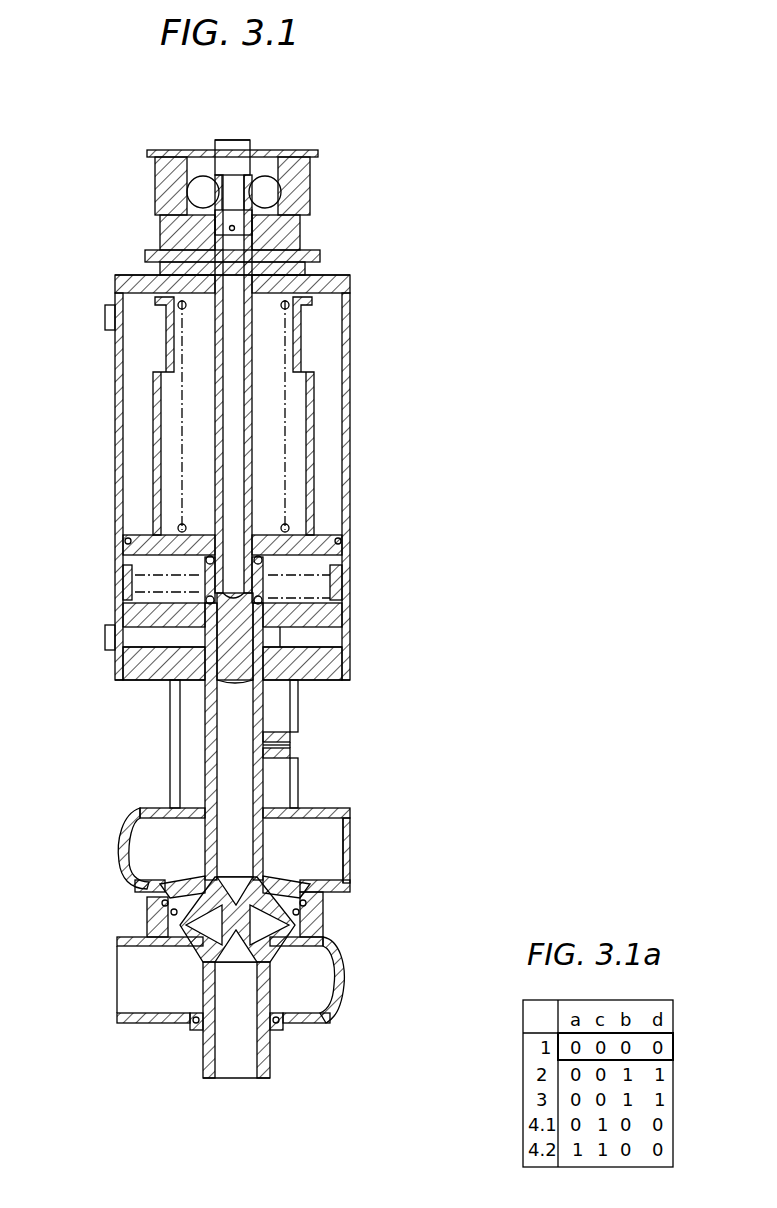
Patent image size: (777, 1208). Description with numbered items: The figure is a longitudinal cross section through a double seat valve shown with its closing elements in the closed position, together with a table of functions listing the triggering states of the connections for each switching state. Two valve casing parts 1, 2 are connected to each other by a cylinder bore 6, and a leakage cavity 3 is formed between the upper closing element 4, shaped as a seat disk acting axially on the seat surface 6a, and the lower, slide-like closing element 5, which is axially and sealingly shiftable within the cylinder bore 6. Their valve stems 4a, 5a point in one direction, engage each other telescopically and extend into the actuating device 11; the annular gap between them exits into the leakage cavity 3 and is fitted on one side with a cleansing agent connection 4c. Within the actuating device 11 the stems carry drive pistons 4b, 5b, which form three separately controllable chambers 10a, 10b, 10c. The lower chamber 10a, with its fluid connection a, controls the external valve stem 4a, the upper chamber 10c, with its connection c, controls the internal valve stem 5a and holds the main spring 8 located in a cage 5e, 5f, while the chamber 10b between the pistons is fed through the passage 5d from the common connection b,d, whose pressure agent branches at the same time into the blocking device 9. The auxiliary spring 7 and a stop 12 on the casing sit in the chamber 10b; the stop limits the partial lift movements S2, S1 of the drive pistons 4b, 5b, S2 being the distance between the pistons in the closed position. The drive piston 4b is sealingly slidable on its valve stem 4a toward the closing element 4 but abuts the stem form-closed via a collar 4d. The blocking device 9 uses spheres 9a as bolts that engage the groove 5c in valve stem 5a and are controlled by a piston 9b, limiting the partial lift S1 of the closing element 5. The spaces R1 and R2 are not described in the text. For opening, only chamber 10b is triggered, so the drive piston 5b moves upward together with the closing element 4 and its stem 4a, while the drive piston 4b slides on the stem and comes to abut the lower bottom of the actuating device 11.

The valve casing part 1 is at (302, 844).
The valve casing part 2 is at (150, 981).
The leakage cavity 3 is at (302, 912).
The closing element 4 is at (178, 884).
The valve stem 4a is at (212, 856).
The drive piston 4b is at (320, 625).
The cleansing agent connection 4c is at (292, 736).
The collar 4d is at (172, 678).
The closing element 5 is at (202, 947).
The valve stem 5a is at (232, 828).
The drive piston 5b is at (326, 535).
The groove 5c is at (236, 175).
The passage 5d is at (254, 578).
The cage 5e is at (312, 490).
The cage 5f is at (300, 320).
The cylinder bore 6 is at (150, 920).
The seat surface 6a is at (162, 898).
The auxiliary spring 7 is at (272, 598).
The main spring 8 is at (322, 422).
The blocking device 9 is at (327, 176).
The spheres 9a is at (265, 196).
The piston 9b is at (180, 197).
The chamber 10a is at (327, 641).
The chamber 10b is at (186, 596).
The chamber 10c is at (330, 352).
The actuating device 11 is at (360, 298).
The stop 12 is at (123, 594).
The partial lift movement S1 is at (75, 567).
The distance between drive pistons S2 is at (345, 600).
The first space R1 is at (306, 745).
The second space R2 is at (322, 848).
The fluid connection a is at (98, 636).
The pressure agent connection b,d is at (264, 138).
The fluid connection c is at (98, 321).